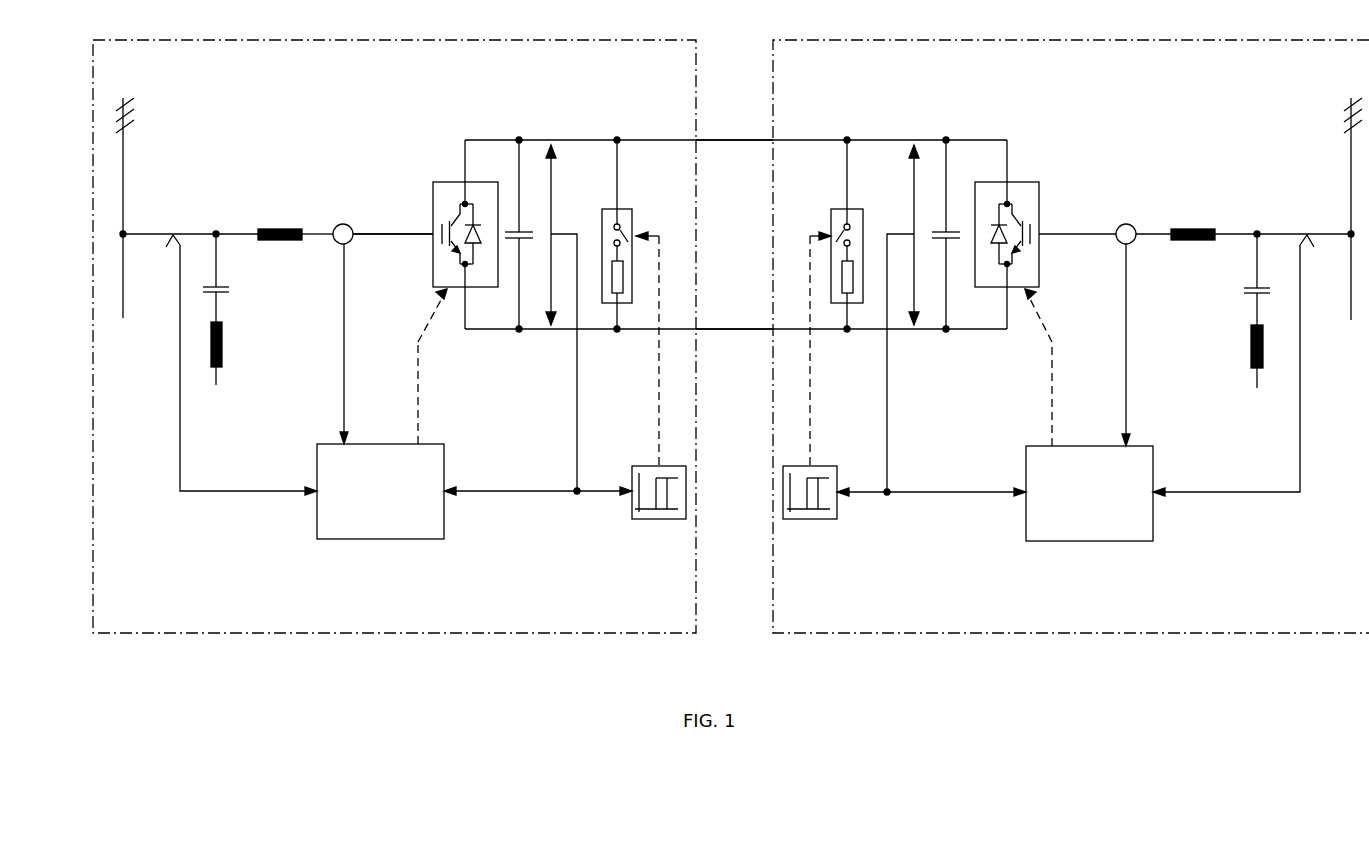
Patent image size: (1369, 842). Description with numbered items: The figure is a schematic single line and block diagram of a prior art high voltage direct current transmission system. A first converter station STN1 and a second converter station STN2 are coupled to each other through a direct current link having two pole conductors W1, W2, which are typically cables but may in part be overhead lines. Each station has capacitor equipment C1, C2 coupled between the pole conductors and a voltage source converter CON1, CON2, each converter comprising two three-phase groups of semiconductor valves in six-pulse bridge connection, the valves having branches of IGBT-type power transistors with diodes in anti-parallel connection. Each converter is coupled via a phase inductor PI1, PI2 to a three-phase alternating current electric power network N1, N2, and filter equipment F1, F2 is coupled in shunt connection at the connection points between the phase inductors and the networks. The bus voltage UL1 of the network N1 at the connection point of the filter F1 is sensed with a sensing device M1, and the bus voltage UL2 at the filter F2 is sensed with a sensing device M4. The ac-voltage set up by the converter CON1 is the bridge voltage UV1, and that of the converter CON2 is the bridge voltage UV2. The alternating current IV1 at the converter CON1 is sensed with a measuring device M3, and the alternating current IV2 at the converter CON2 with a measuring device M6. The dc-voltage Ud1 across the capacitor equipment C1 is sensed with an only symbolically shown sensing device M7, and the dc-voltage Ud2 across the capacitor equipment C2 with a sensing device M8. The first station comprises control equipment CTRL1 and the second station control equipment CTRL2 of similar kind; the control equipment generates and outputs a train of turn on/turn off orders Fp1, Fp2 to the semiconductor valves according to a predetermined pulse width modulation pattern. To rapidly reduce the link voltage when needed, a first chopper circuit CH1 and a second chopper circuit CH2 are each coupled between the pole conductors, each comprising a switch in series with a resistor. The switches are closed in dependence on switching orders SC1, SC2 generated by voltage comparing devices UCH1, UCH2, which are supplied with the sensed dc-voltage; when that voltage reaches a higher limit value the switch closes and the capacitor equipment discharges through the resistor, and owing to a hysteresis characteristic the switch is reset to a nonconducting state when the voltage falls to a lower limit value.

The first converter station STN1 is at (214, 74).
The second converter station STN2 is at (1310, 74).
The three-phase alternating current electric power network N1 is at (125, 280).
The three-phase alternating current electric power network N2 is at (1349, 282).
The sensing device M1 is at (163, 249).
The sensing device M4 is at (1316, 249).
The measuring device M3 is at (343, 224).
The measuring device M6 is at (1126, 224).
The sensing device M7 is at (553, 234).
The sensing device M8 is at (887, 234).
The phase inductor PI1 is at (280, 229).
The phase inductor PI2 is at (1193, 229).
The filter equipment F1 is at (226, 307).
The filter equipment F2 is at (1247, 308).
The voltage source converter CON1 is at (433, 185).
The voltage source converter CON2 is at (1039, 185).
The capacitor equipment C1 is at (512, 230).
The capacitor equipment C2 is at (955, 230).
The first chopper circuit CH1 is at (625, 209).
The second chopper circuit CH2 is at (842, 209).
The pole conductor W1 is at (727, 140).
The pole conductor W2 is at (740, 329).
The bridge voltage of the converter CON1 UV1 is at (393, 222).
The bridge voltage of the converter CON2 UV2 is at (1077, 222).
The alternating current at the converter CON1 IV1 is at (326, 344).
The alternating current at the converter CON2 IV2 is at (1142, 345).
The bus voltage of the alternating current network N1 UL1 is at (248, 370).
The bus voltage of the alternating current network N2 UL2 is at (1226, 370).
The dc-voltage across the capacitor equipment C1 Ud1 is at (538, 364).
The dc-voltage across the capacitor equipment C2 Ud2 is at (931, 365).
The train of turn on/turn off orders Fp1 is at (438, 366).
The train of turn on/turn off orders Fp2 is at (1032, 367).
The switching order SC1 is at (638, 349).
The switching order SC2 is at (828, 349).
The control equipment CTRL1 is at (392, 532).
The control equipment CTRL2 is at (1101, 532).
The voltage comparing device UCH1 is at (660, 519).
The voltage comparing device UCH2 is at (808, 519).